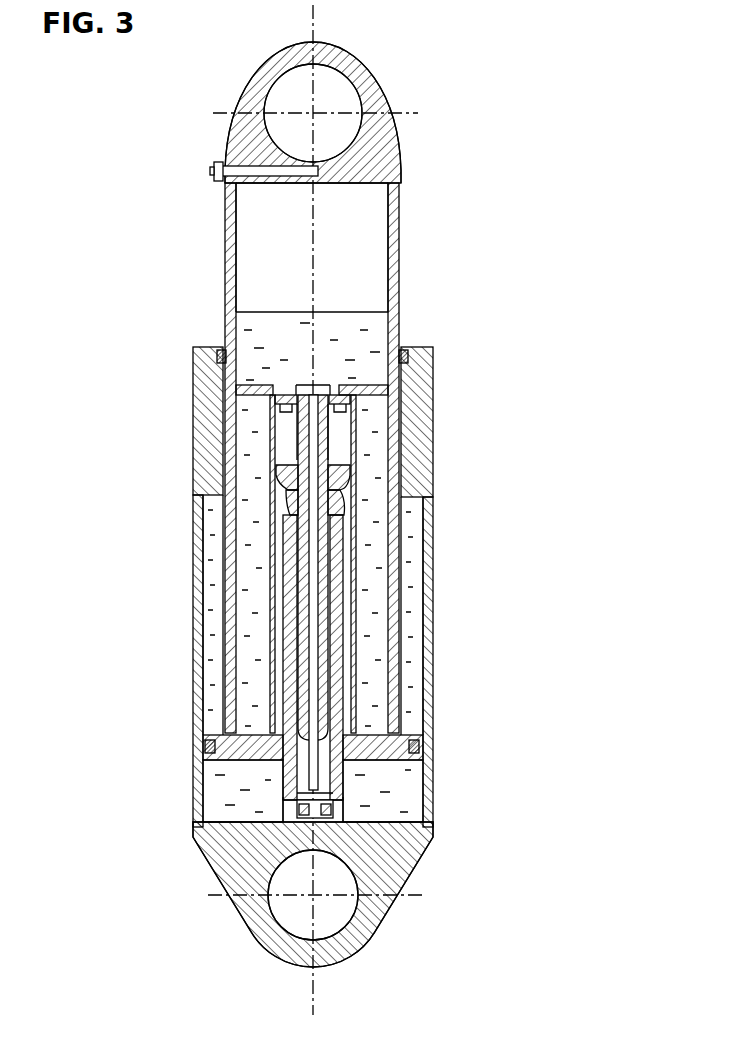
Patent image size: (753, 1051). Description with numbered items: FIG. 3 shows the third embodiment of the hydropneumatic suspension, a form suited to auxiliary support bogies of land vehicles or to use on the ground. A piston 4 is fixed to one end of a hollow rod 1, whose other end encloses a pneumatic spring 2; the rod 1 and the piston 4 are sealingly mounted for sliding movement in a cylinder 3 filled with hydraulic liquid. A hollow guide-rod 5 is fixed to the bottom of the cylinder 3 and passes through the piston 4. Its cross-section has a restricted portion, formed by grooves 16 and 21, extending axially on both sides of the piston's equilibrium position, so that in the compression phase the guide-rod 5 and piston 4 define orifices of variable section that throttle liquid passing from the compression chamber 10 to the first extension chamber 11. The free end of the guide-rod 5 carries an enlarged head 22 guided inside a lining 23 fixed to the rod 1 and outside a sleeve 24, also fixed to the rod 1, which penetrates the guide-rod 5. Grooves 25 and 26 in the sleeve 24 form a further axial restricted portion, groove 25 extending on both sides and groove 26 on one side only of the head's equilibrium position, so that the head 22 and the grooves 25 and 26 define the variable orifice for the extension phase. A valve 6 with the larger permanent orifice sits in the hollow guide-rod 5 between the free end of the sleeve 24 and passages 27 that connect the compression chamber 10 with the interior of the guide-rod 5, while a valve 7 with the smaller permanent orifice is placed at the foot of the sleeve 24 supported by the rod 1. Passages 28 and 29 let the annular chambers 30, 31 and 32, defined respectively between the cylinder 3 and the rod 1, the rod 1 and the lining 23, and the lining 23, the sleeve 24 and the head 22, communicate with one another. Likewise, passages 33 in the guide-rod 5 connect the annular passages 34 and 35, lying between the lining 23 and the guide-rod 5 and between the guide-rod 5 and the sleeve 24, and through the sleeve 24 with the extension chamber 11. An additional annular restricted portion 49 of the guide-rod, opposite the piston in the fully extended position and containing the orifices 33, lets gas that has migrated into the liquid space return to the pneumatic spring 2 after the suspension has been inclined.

The hollow rod 1 is at (400, 225).
The pneumatic spring 2 is at (312, 247).
The cylinder 3 is at (413, 383).
The piston 4 is at (383, 748).
The guide-rod 5 is at (337, 600).
The valve 6 is at (316, 794).
The valve 7 is at (334, 379).
The compression chamber 10 is at (392, 807).
The first extension chamber 11 is at (312, 346).
The groove 16 is at (287, 785).
The groove 21 is at (338, 708).
The enlarged head 22 is at (338, 473).
The lining 23 is at (357, 558).
The sleeve 24 is at (322, 653).
The groove 25 is at (323, 442).
The groove 26 is at (305, 450).
The passages 27 is at (287, 818).
The passage 28 is at (207, 729).
The passage 29 is at (193, 407).
The annular chamber 30 is at (218, 667).
The annular chamber 31 is at (253, 622).
The annular chamber 32 is at (286, 427).
The passages 33 is at (290, 500).
The annular passage 34 is at (282, 547).
The annular passage 35 is at (297, 593).
The annular restricted portion 49 is at (343, 515).